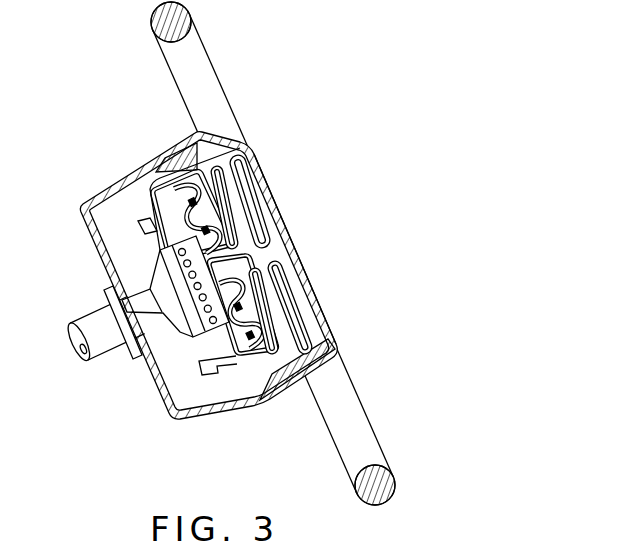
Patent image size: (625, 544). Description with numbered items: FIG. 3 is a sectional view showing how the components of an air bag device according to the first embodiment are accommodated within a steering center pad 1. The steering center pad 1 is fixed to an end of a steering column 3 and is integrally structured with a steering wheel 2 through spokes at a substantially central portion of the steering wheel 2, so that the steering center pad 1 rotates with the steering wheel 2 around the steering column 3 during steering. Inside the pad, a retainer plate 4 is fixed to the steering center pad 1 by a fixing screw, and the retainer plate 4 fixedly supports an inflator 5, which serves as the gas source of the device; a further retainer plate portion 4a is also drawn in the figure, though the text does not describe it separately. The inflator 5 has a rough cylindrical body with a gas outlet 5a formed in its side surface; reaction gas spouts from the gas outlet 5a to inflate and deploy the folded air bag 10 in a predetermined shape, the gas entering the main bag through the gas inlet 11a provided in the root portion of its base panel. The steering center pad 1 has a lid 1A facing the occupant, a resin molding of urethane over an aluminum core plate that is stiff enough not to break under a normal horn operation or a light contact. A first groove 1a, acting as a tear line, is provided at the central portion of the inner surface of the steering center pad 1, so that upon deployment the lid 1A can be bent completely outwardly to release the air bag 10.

The steering center pad 1 is at (330, 322).
The lid 1A is at (324, 296).
The first groove 1a is at (290, 243).
The steering wheel 2 is at (396, 487).
The steering column 3 is at (102, 350).
The retainer plate 4 is at (140, 220).
The contact 4a is at (202, 362).
The inflator 5 is at (160, 247).
The gas outlet 5a is at (165, 262).
The air bag 10 is at (268, 232).
The gas inlet 11a is at (240, 350).